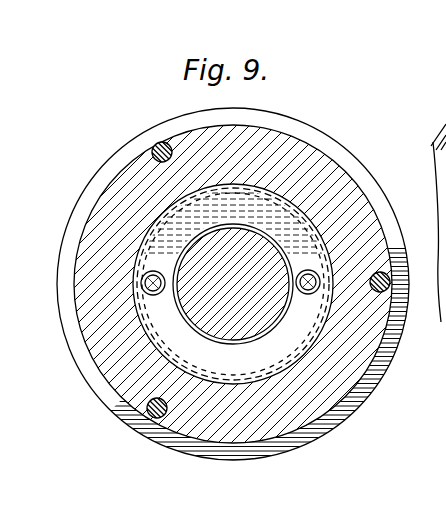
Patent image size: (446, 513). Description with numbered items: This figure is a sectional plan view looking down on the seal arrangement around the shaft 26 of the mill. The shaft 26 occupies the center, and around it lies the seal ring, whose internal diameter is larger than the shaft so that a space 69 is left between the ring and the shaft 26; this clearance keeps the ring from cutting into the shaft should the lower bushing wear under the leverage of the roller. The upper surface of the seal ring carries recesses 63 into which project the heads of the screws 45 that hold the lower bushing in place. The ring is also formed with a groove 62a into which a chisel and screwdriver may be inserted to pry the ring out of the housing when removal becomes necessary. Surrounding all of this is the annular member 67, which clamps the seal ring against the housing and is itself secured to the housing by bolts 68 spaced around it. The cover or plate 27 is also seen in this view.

The annular member 67 is at (326, 133).
The cover disc 27 is at (253, 426).
The bolts 68 is at (162, 142).
The groove 62a is at (244, 336).
The space 69 is at (199, 321).
The shaft 26 is at (257, 306).
The recesses 63 is at (155, 270).
The screws 45 is at (156, 293).